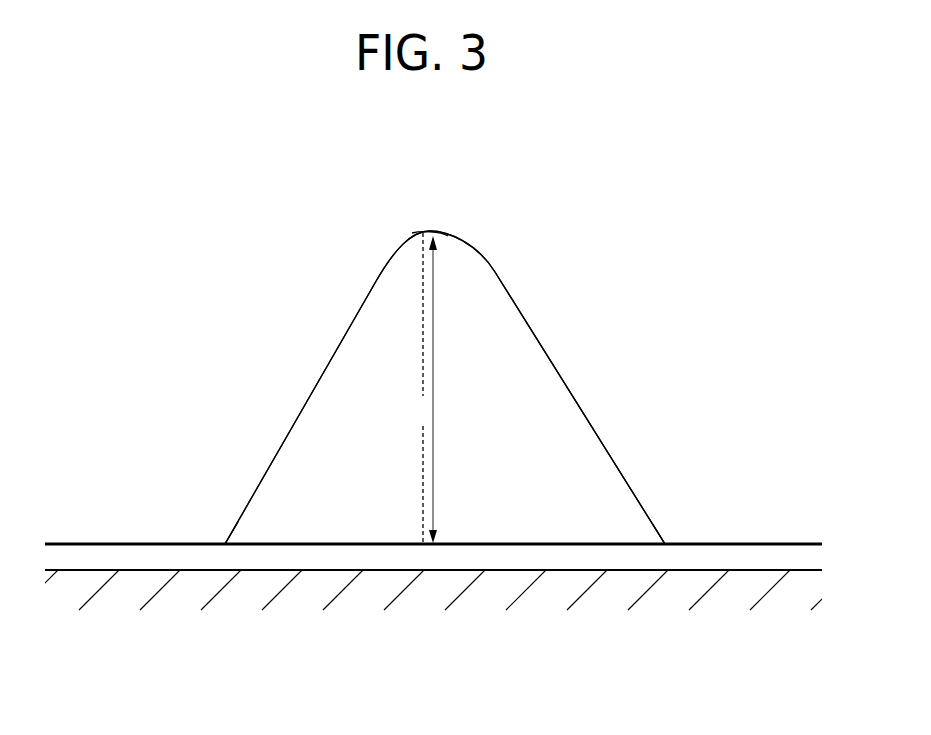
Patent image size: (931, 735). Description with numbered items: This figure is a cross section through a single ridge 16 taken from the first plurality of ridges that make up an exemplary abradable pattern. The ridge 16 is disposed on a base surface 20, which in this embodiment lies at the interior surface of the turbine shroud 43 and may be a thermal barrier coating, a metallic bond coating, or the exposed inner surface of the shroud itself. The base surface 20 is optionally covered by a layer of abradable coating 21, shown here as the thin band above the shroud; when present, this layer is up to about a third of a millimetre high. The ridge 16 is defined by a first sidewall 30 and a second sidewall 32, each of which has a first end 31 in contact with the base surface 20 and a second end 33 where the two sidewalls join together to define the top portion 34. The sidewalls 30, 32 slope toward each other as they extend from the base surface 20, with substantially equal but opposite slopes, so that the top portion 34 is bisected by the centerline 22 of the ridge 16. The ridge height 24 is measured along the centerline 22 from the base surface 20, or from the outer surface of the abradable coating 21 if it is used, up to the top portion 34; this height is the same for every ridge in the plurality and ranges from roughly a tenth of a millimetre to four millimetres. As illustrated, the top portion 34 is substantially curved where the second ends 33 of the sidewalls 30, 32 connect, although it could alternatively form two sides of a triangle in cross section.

The ridge 16 is at (414, 203).
The base surface 20 is at (152, 582).
The layer of abradable coating 21 is at (118, 550).
The centerline 22 is at (437, 365).
The ridge height 24 is at (420, 388).
The first sidewall 30 is at (300, 410).
The first end 31 is at (238, 522).
The second sidewall 32 is at (575, 398).
The second end 33 is at (378, 285).
The top portion 34 is at (448, 238).
The turbine shroud 43 is at (372, 637).